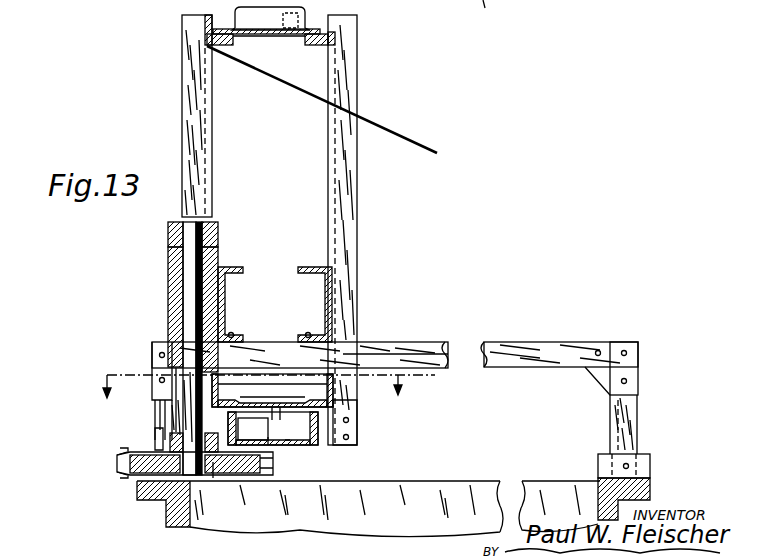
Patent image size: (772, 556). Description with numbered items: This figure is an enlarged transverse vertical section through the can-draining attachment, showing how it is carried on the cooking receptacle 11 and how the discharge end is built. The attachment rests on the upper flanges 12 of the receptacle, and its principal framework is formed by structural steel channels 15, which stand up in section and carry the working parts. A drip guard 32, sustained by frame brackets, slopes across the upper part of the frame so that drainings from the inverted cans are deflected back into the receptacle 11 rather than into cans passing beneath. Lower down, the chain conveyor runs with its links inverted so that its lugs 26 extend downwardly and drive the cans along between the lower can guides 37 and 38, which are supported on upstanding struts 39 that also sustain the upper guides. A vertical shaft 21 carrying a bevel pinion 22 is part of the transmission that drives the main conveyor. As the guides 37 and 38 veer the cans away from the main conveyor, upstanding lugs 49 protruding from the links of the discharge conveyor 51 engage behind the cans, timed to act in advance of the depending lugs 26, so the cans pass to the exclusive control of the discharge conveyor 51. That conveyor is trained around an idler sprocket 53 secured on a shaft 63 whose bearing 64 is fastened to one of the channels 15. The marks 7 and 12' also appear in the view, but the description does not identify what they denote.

The section line 7 is at (482, 5).
The cooking receptacle 11 is at (485, 0).
The upper flanges 12 is at (387, 269).
The right supporting beam 12' is at (559, 398).
The structural steel channels 15 is at (328, 299).
The vertical shaft 21 is at (327, 390).
The bevel pinion 22 is at (218, 391).
The lugs 26 is at (290, 440).
The drip guard 32 is at (284, 83).
The guide 37 is at (338, 450).
The guide 38 is at (260, 447).
The upstanding struts 39 is at (328, 162).
The upstanding lugs 49 is at (106, 431).
The discharge conveyor 51 is at (117, 462).
The idler sprocket 53 is at (213, 470).
The shaft 63 is at (193, 296).
The bearing 64 is at (170, 282).